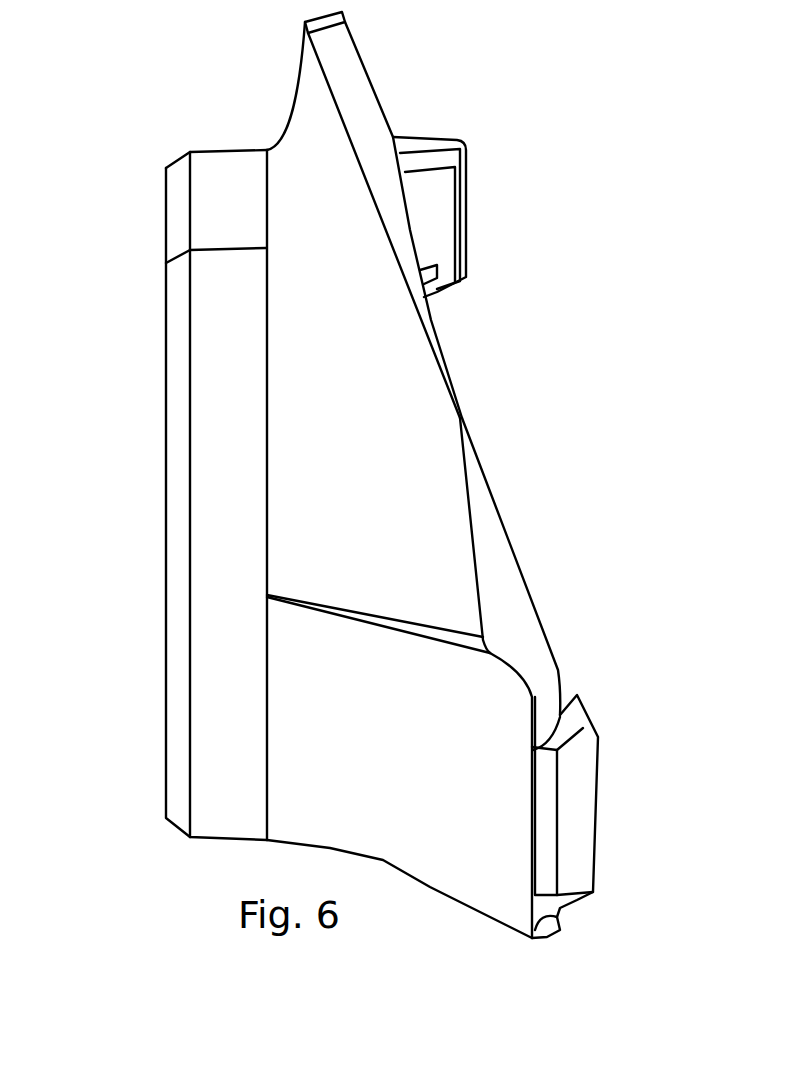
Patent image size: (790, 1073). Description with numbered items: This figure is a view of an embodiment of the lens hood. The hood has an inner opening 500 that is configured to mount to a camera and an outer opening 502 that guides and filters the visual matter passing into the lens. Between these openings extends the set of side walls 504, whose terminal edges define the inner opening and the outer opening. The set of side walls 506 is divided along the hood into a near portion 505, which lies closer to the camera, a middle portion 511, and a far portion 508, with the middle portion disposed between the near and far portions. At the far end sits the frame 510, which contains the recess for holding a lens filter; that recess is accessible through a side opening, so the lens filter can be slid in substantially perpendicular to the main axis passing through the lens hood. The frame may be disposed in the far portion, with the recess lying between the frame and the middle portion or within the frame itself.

The inner opening 500 is at (165, 482).
The outer opening 502 is at (442, 343).
The set of side walls 504 is at (363, 480).
The near portion 505 is at (220, 399).
The set of side walls 506 is at (377, 760).
The far portion 508 is at (490, 546).
The frame 510 is at (570, 792).
The middle portion 511 is at (352, 418).